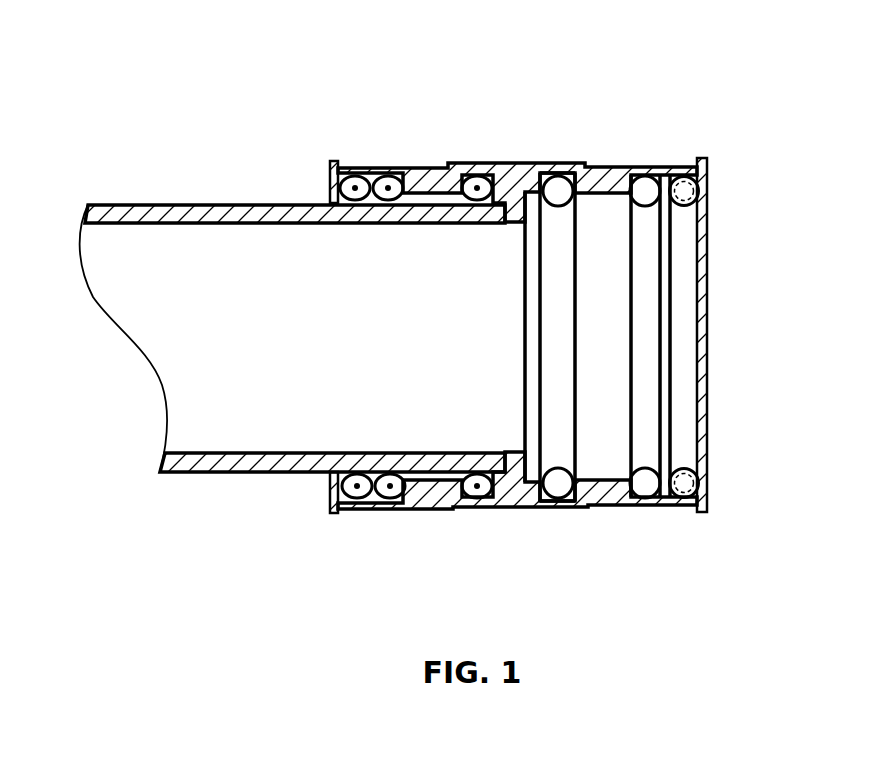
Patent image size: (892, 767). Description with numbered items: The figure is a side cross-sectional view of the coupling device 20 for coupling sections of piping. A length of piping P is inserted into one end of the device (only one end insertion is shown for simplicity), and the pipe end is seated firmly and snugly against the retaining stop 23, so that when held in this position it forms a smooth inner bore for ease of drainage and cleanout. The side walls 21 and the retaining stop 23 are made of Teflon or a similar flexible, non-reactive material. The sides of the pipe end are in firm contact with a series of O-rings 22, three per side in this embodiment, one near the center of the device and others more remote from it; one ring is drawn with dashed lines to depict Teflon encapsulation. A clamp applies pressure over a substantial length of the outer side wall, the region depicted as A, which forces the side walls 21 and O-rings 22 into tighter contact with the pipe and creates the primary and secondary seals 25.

The coupling device 20 is at (510, 90).
The side walls 21 is at (553, 165).
The O-rings 22 is at (699, 208).
The retaining stop 23 is at (543, 457).
The primary and secondary seals 25 is at (477, 486).
The clamp pressure region A is at (427, 167).
The piping P is at (177, 366).